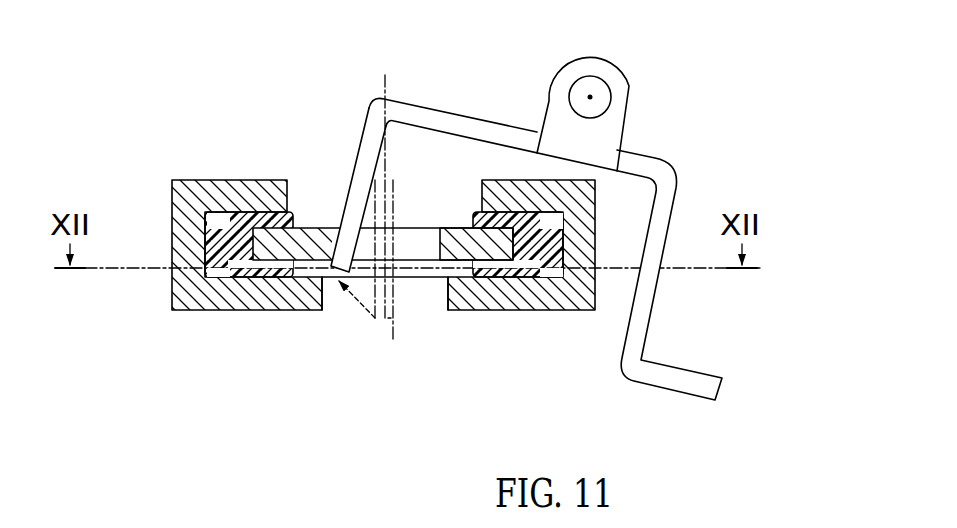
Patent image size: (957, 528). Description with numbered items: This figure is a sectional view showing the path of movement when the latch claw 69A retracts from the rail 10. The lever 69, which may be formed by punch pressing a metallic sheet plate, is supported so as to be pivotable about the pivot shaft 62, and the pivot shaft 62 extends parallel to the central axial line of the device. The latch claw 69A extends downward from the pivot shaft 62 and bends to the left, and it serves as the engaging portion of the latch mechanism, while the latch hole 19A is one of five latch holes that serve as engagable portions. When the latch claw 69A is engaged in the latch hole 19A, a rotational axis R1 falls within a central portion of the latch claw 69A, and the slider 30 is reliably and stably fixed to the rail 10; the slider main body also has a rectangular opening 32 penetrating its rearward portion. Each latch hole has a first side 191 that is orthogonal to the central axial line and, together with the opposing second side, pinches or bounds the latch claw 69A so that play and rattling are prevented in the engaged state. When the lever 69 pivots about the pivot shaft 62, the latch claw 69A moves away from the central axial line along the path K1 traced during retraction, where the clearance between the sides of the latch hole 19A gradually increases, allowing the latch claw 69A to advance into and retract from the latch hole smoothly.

The rail 10 is at (170, 314).
The latch hole 19A is at (334, 281).
The slider 30 is at (316, 225).
The opening 32 is at (440, 242).
The first side 191 is at (428, 292).
The pivot shaft 62 is at (606, 97).
The lever 69 is at (682, 176).
The latch claw 69A is at (347, 247).
The rotational axis R1 is at (385, 193).
The path K1 is at (345, 289).